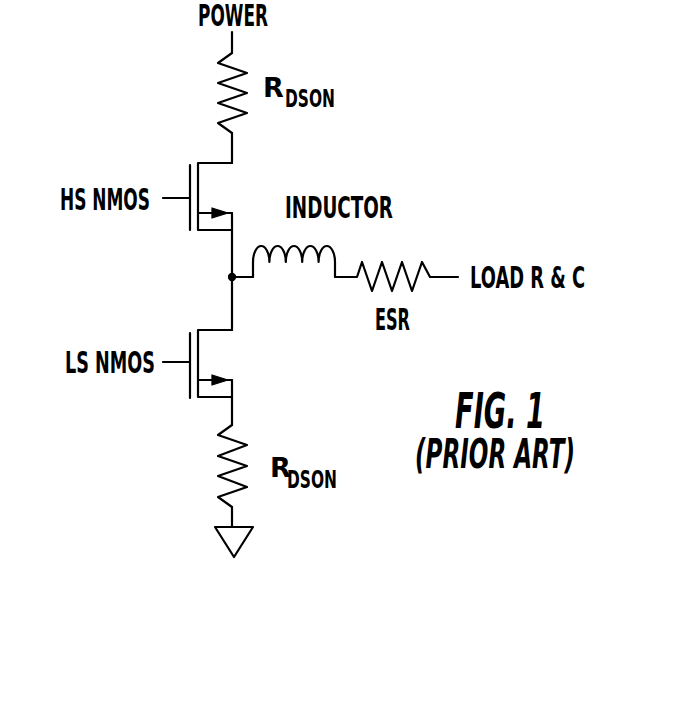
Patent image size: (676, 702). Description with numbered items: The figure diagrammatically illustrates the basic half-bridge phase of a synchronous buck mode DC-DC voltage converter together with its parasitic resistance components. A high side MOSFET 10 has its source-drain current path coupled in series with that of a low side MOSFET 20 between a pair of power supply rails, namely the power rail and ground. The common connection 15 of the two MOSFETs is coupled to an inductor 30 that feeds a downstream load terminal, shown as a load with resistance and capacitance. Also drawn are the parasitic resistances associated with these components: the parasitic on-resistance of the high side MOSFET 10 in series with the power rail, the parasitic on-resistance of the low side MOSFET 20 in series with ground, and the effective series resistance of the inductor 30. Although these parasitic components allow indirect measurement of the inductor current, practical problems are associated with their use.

The high side MOSFET 10 is at (228, 180).
The common connection 15 is at (232, 277).
The low side MOSFET 20 is at (226, 353).
The inductor 30 is at (336, 248).